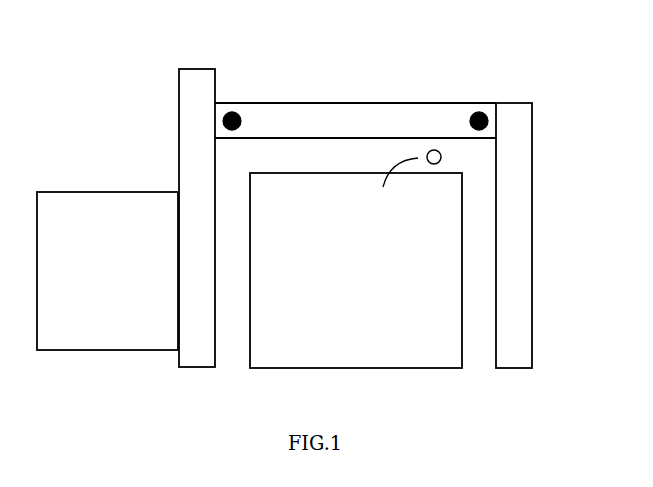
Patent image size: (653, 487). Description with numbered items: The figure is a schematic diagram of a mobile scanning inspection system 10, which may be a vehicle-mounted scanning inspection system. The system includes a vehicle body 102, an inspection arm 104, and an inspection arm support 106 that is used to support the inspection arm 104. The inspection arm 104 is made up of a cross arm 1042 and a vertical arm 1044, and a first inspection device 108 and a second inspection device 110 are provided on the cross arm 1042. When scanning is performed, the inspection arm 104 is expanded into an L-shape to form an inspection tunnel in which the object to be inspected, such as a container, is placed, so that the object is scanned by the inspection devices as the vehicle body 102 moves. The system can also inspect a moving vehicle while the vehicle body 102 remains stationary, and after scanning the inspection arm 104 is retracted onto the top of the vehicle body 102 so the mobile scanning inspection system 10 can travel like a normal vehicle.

The mobile scanning inspection system 10 is at (40, 50).
The vehicle body 102 is at (73, 192).
The inspection arm 104 is at (416, 215).
The inspection arm support 106 is at (198, 69).
The first inspection device 108 is at (237, 115).
The second inspection device 110 is at (483, 114).
The cross arm 1042 is at (315, 112).
The vertical arm 1044 is at (521, 221).